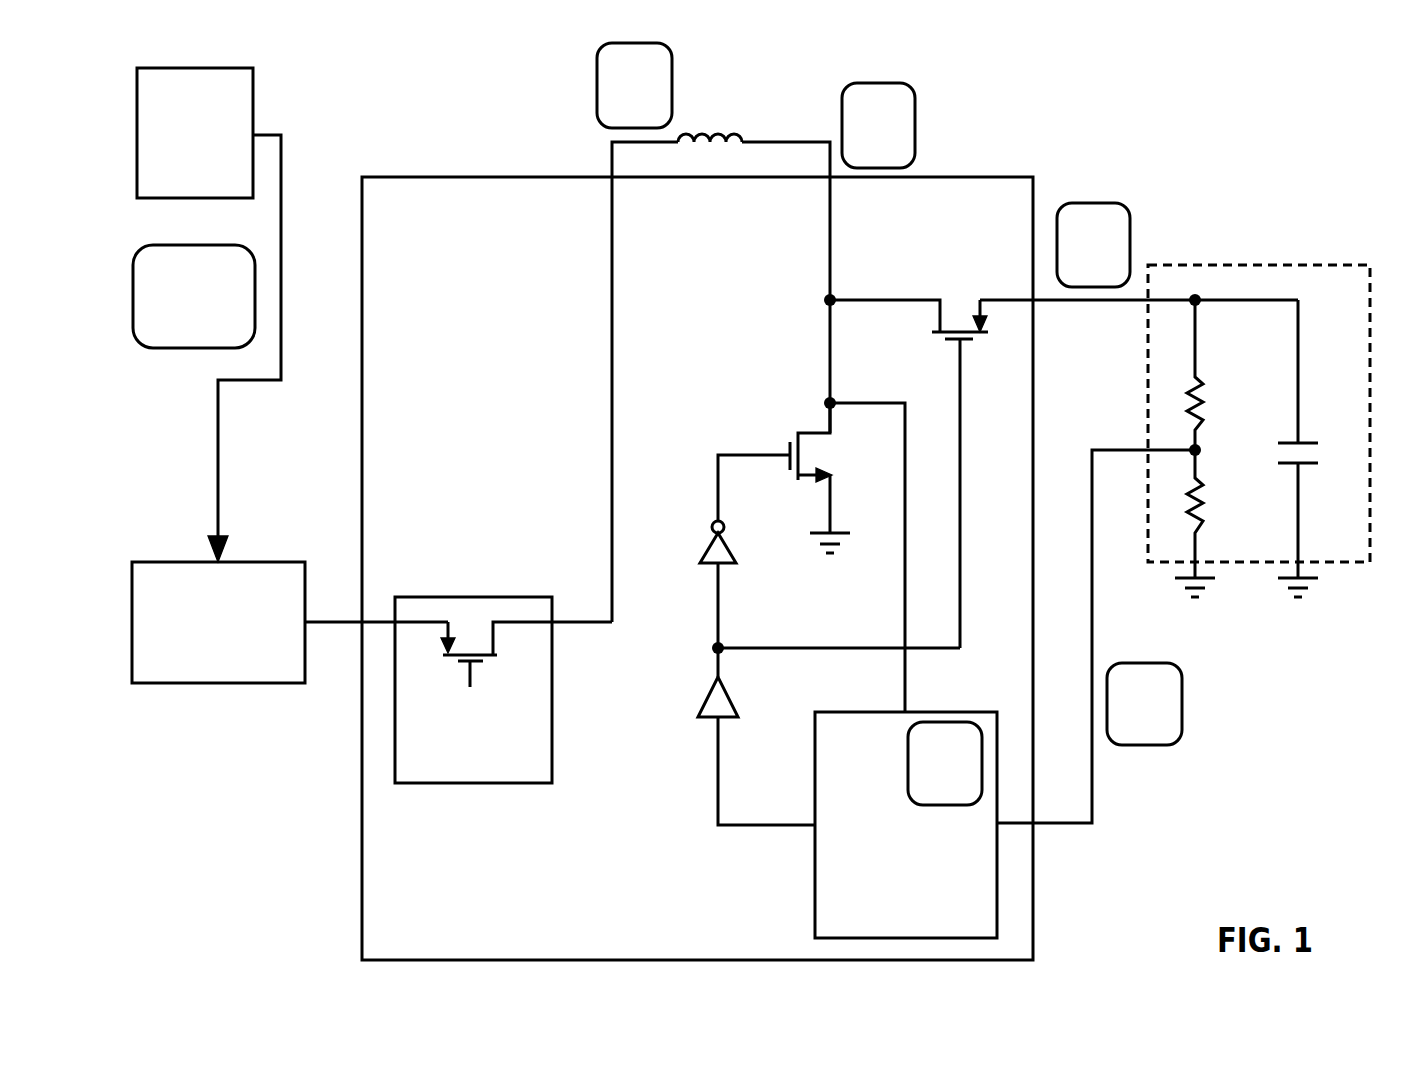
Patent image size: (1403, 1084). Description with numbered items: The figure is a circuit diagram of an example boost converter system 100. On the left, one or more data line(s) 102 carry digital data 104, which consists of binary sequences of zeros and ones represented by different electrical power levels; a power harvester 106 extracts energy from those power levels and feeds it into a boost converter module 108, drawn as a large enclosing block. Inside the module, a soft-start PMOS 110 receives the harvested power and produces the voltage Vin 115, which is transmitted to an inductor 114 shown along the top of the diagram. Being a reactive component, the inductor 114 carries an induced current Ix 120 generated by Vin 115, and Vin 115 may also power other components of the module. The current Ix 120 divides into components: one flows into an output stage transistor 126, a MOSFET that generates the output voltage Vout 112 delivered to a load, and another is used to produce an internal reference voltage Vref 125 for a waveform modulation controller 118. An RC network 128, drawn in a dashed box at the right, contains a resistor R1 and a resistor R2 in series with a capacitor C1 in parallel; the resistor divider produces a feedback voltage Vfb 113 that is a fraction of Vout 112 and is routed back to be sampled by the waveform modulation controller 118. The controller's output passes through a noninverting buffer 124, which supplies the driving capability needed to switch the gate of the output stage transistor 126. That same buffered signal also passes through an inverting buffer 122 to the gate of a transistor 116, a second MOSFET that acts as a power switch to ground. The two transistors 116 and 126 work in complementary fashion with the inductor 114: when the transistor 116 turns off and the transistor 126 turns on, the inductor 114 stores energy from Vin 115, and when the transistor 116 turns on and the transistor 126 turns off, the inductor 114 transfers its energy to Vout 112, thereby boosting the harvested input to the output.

The boost converter system 100 is at (1240, 98).
The data line(s) 102 is at (195, 133).
The digital data 104 is at (194, 296).
The power harvester 106 is at (218, 622).
The boost converter module 108 is at (697, 568).
The soft-start PMOS 110 is at (503, 690).
The output voltage Vout 112 is at (1093, 245).
The feedback voltage Vfb 113 is at (1144, 704).
The inductor 114 is at (685, 125).
The voltage Vin 115 is at (634, 85).
The transistor 116 is at (797, 433).
The waveform modulation controller 118 is at (906, 825).
The current Ix 120 is at (878, 125).
The inverting buffer 122 is at (706, 546).
The noninverting buffer 124 is at (704, 697).
The reference voltage Vref 125 is at (945, 763).
The output stage transistor 126 is at (980, 300).
The RC network 128 is at (1259, 418).
The resistor R1 is at (1212, 375).
The resistor R2 is at (1212, 514).
The capacitor C1 is at (1315, 439).